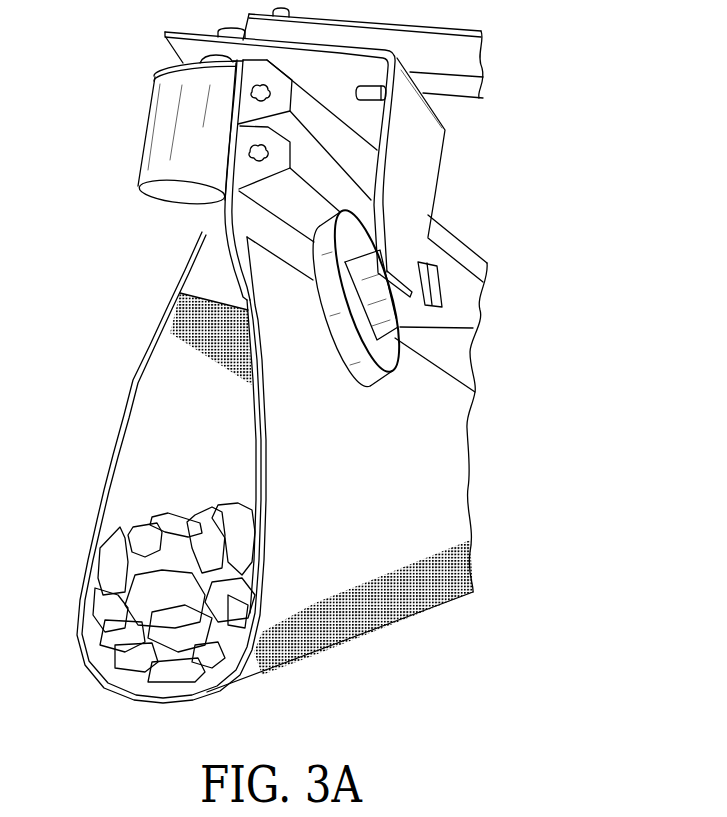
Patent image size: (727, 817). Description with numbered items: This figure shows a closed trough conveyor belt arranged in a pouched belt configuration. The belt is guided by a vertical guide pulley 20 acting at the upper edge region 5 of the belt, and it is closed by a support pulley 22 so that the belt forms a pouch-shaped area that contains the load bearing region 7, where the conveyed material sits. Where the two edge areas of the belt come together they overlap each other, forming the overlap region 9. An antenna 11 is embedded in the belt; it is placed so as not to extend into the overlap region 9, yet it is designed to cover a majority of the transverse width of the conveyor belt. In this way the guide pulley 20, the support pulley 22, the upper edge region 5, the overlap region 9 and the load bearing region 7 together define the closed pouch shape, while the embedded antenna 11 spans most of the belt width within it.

The upper edge region 5 is at (223, 145).
The load bearing region 7 is at (143, 677).
The overlap region 9 is at (243, 152).
The antenna 11 is at (96, 505).
The vertical guide pulley 20 is at (162, 147).
The support pulley 22 is at (378, 388).